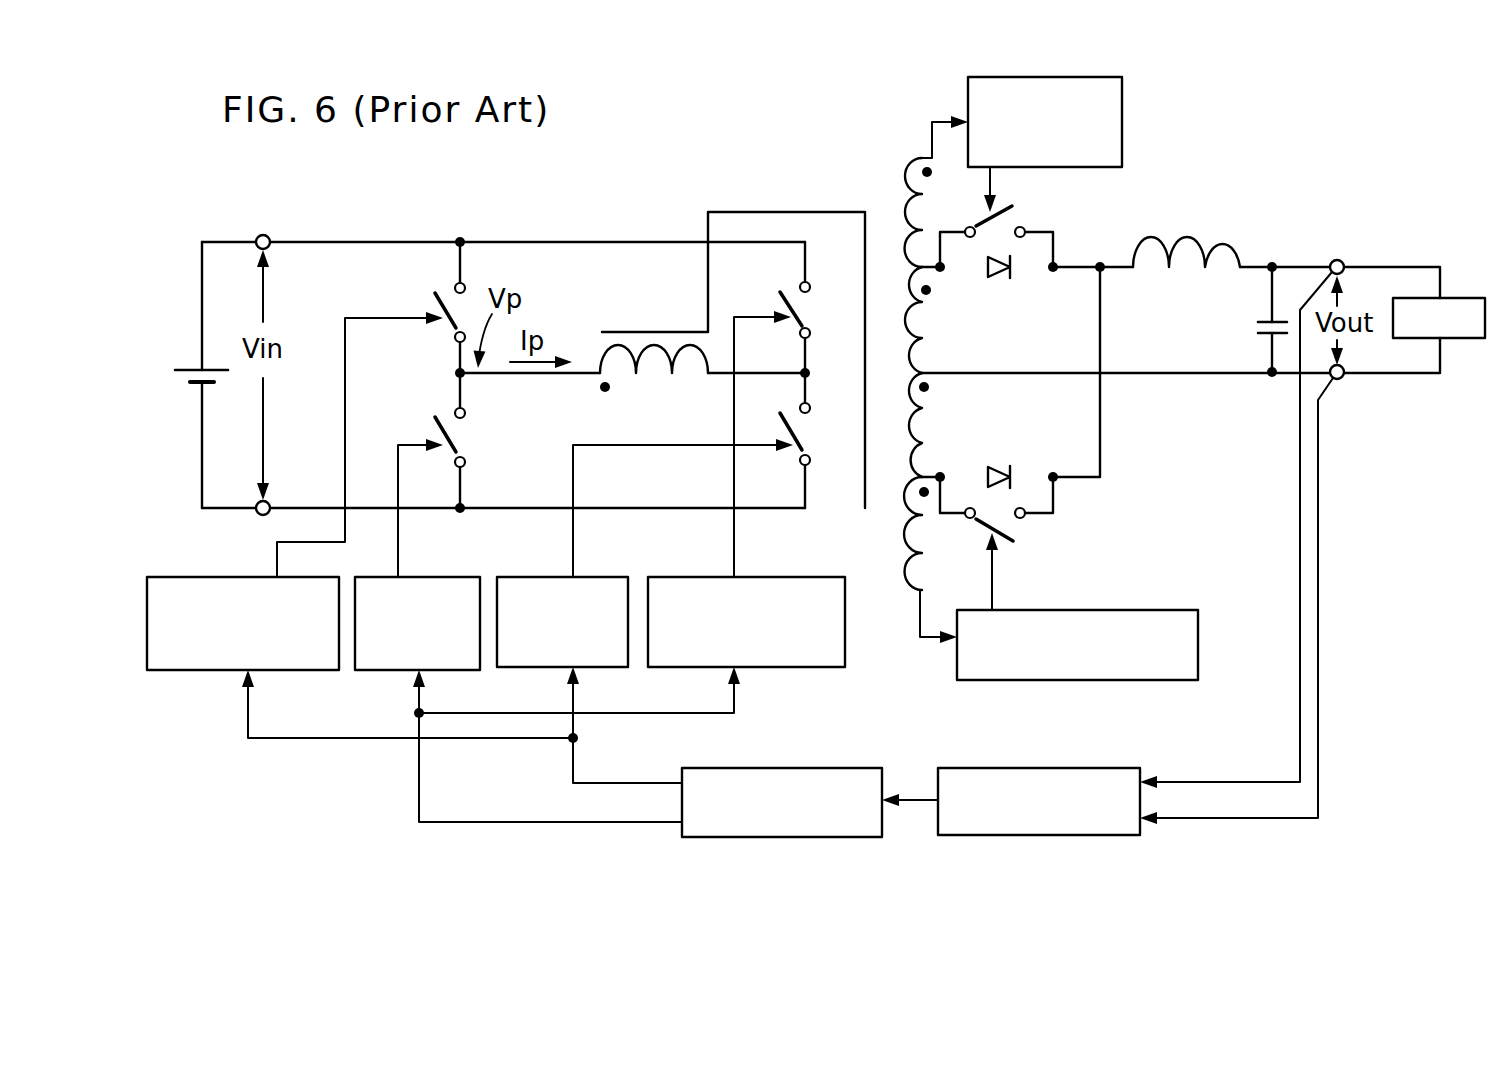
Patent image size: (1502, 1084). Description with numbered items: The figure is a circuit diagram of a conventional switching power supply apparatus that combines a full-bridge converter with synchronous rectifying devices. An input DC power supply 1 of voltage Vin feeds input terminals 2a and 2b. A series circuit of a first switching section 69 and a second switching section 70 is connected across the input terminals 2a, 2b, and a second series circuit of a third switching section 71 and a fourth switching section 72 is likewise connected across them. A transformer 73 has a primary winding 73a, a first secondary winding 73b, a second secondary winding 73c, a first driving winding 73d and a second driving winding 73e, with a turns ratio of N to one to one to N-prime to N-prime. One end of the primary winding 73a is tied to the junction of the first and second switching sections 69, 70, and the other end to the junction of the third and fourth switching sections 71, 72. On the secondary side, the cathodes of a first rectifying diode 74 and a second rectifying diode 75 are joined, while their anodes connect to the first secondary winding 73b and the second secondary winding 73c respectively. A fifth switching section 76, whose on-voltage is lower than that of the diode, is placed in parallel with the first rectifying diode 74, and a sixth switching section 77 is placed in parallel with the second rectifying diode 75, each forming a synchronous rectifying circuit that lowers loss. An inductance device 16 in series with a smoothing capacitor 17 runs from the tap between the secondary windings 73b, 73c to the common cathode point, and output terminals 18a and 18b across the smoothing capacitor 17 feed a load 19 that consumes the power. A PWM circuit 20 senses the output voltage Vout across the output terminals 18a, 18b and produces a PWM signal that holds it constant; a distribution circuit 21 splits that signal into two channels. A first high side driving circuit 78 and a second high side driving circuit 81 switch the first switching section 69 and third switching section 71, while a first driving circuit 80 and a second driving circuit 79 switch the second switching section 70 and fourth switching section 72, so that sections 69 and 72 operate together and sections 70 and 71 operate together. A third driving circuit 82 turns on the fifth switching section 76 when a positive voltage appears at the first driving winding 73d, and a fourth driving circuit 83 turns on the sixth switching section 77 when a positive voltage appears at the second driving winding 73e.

The input DC power supply 1 is at (190, 368).
The input terminal 2a is at (268, 236).
The input terminal 2b is at (272, 504).
The inductance device 16 is at (1192, 232).
The smoothing capacitor 17 is at (1260, 320).
The output terminal 18a is at (1344, 258).
The output terminal 18b is at (1346, 382).
The load 19 is at (1450, 340).
The PWM circuit 20 is at (1035, 768).
The distribution circuit 21 is at (815, 768).
The first switching section 69 is at (450, 292).
The second switching section 70 is at (450, 416).
The third switching section 71 is at (790, 288).
The fourth switching section 72 is at (812, 456).
The transformer 73 is at (750, 212).
The primary winding 73a is at (618, 380).
The first secondary winding 73b is at (922, 308).
The second secondary winding 73c is at (922, 405).
The first driving winding 73d is at (892, 160).
The second driving winding 73e is at (893, 585).
The first rectifying diode 74 is at (1005, 280).
The second rectifying diode 75 is at (1008, 458).
The fifth switching section 76 is at (1010, 216).
The sixth switching section 77 is at (1012, 528).
The first high side driving circuit 78 is at (215, 577).
The second driving circuit 79 is at (585, 577).
The first driving circuit 80 is at (435, 577).
The second high side driving circuit 81 is at (775, 577).
The third driving circuit 82 is at (1122, 132).
The fourth driving circuit 83 is at (1118, 610).